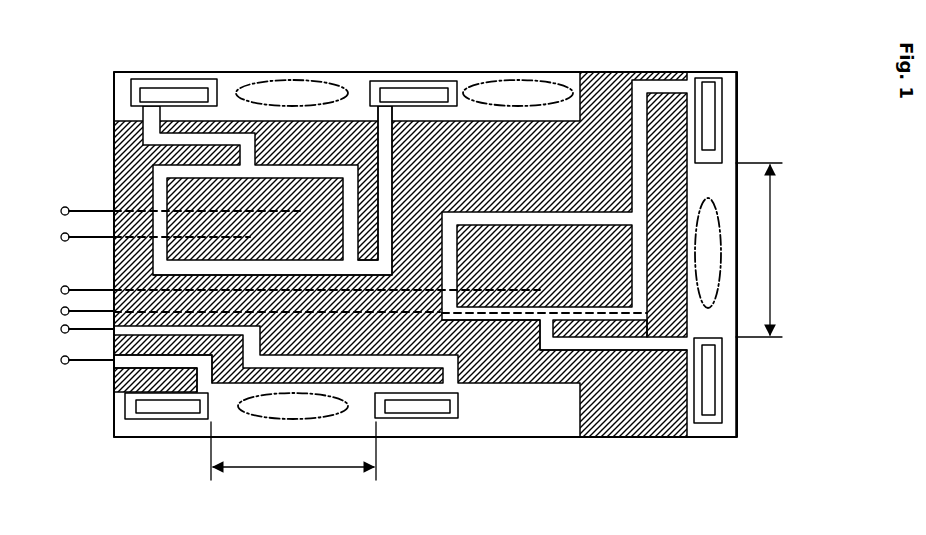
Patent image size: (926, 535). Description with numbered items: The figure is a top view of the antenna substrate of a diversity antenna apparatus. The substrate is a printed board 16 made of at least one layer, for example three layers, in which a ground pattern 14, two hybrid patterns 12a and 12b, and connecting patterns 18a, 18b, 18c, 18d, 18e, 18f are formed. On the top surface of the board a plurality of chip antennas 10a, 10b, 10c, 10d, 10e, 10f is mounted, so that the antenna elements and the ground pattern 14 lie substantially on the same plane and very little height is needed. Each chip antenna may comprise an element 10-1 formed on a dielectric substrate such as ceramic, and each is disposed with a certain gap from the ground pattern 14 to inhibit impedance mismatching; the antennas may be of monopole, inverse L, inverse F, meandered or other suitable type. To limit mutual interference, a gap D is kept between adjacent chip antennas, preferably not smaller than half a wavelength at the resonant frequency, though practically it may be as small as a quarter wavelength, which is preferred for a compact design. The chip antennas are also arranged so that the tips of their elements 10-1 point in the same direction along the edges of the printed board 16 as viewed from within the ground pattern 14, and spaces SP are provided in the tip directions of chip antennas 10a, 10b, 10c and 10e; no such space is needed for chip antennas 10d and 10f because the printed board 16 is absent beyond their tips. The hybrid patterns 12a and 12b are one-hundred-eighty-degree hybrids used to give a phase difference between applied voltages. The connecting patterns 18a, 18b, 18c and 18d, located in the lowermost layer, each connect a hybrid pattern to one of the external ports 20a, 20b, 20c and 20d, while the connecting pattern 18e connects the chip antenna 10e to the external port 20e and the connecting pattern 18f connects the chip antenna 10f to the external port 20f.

The chip antenna 10a is at (190, 79).
The element 10-1 is at (204, 88).
The chip antenna 10b is at (420, 82).
The chip antenna 10c is at (720, 120).
The chip antenna 10d is at (722, 398).
The chip antenna 10e is at (416, 421).
The chip antenna 10f is at (137, 418).
The hybrid pattern 12a is at (574, 213).
The hybrid pattern 12b is at (113, 255).
The ground pattern 14 is at (612, 437).
The printed board 16 is at (713, 72).
The connecting pattern 18a is at (140, 212).
The connecting pattern 18b is at (140, 240).
The connecting pattern 18c is at (632, 240).
The connecting pattern 18d is at (426, 314).
The connecting pattern 18e is at (348, 370).
The connecting pattern 18f is at (116, 366).
The external port 20a is at (61, 211).
The external port 20b is at (61, 237).
The external port 20c is at (61, 290).
The external port 20d is at (61, 311).
The external port 20e is at (61, 329).
The external port 20f is at (61, 360).
The space SP is at (295, 80).
The gap D is at (504, 321).